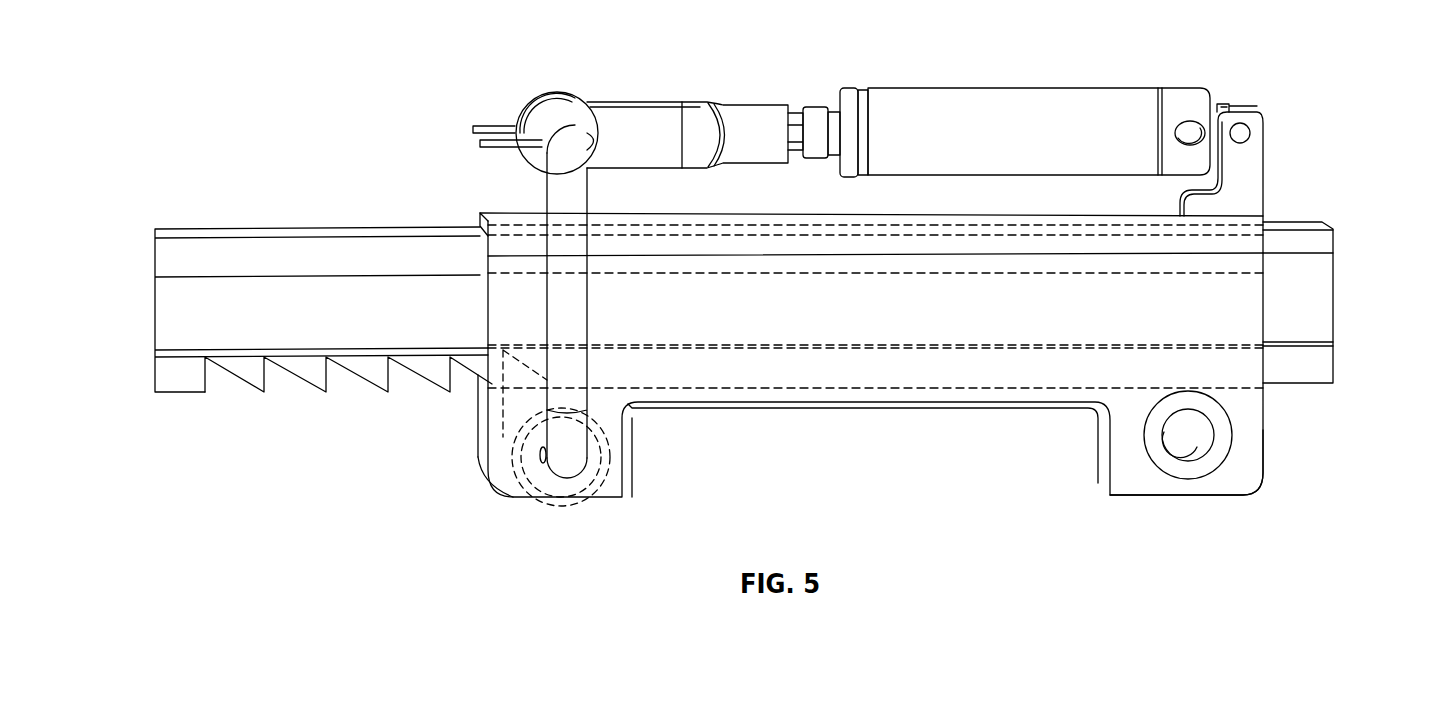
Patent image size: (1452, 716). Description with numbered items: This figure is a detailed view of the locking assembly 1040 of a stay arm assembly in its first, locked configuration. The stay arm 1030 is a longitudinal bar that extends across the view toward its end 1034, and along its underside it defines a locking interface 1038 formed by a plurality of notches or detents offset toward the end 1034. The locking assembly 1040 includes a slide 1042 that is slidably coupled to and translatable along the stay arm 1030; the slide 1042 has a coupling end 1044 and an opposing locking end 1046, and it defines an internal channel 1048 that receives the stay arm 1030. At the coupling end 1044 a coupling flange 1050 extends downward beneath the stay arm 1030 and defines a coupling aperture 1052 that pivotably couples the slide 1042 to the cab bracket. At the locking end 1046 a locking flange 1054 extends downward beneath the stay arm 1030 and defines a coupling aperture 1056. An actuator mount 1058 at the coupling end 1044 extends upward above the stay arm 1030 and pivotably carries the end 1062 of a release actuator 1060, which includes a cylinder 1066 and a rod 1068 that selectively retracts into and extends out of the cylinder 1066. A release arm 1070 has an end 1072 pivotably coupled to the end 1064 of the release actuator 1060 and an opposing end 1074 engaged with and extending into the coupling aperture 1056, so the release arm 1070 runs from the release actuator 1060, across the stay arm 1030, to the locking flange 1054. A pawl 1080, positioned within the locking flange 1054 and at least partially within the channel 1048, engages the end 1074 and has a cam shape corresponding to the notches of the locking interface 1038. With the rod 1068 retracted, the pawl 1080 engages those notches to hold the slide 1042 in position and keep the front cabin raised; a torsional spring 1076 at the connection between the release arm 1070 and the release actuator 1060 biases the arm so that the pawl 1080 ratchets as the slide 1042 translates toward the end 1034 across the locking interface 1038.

The stay arm 1030 is at (273, 258).
The end 1034 is at (1337, 251).
The locking interface 1038 is at (358, 410).
The locking assembly 1040 is at (1229, 56).
The slide 1042 is at (900, 365).
The coupling end 1044 is at (1269, 261).
The locking end 1046 is at (480, 303).
The channel 1048 is at (1269, 316).
The coupling flange 1050 is at (1245, 465).
The coupling aperture 1052 is at (1195, 465).
The locking flange 1054 is at (511, 490).
The coupling aperture 1056 is at (543, 477).
The actuator mount 1058 is at (1248, 180).
The release actuator 1060 is at (917, 106).
The end 1062 is at (1266, 117).
The end 1064 is at (435, 95).
The cylinder 1066 is at (1082, 102).
The rod 1068 is at (673, 137).
The release arm 1070 is at (572, 290).
The end 1072 is at (558, 133).
The end 1074 is at (570, 463).
The torsional spring 1076 is at (501, 116).
The pawl 1080 is at (507, 440).